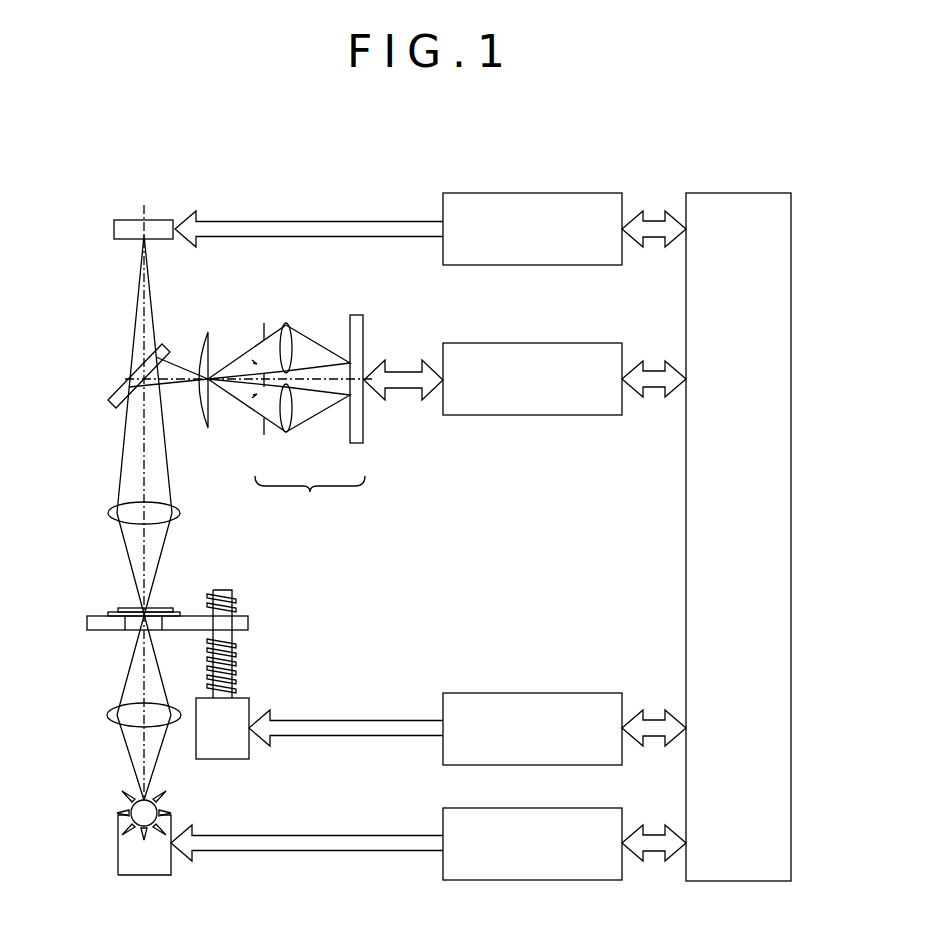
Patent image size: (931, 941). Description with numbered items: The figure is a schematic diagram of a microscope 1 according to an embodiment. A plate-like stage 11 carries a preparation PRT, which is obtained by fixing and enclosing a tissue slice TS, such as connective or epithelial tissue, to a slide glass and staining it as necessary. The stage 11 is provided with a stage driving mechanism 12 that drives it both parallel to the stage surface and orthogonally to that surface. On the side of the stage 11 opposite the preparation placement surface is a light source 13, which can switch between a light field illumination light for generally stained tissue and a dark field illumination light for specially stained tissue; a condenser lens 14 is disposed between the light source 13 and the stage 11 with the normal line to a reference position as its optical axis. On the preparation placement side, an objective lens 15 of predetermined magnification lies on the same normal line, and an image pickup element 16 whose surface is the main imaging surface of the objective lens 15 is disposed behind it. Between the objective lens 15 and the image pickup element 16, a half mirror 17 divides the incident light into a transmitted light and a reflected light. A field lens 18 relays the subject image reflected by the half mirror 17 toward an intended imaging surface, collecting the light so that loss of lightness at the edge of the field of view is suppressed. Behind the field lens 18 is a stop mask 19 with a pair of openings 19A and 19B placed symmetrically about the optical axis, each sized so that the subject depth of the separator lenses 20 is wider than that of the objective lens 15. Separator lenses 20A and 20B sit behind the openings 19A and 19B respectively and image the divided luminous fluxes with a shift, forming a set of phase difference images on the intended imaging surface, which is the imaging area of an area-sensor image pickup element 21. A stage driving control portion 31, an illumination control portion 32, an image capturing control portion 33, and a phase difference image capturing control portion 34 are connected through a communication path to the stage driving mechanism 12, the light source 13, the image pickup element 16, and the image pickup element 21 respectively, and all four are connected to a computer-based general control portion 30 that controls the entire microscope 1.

The microscope 1 is at (645, 126).
The stage 11 is at (249, 623).
The stage driving mechanism 12 is at (220, 760).
The light source 13 is at (118, 862).
The condenser lens 14 is at (107, 715).
The objective lens 15 is at (181, 513).
The image pickup element 16 is at (156, 218).
The half mirror 17 is at (166, 344).
The field lens 18 is at (204, 330).
The stop mask 19 is at (263, 322).
The opening 19A is at (253, 355).
The opening 19B is at (253, 403).
The separator lenses 20 is at (310, 493).
The separator lens 20A is at (292, 352).
The separator lens 20B is at (287, 433).
The image pickup element 21 is at (357, 314).
The general control portion 30 is at (737, 192).
The stage driving control portion 31 is at (540, 692).
The illumination control portion 32 is at (540, 807).
The image capturing control portion 33 is at (540, 192).
The phase difference image capturing control portion 34 is at (540, 342).
The tissue slice TS is at (118, 611).
The preparation PRT is at (178, 608).